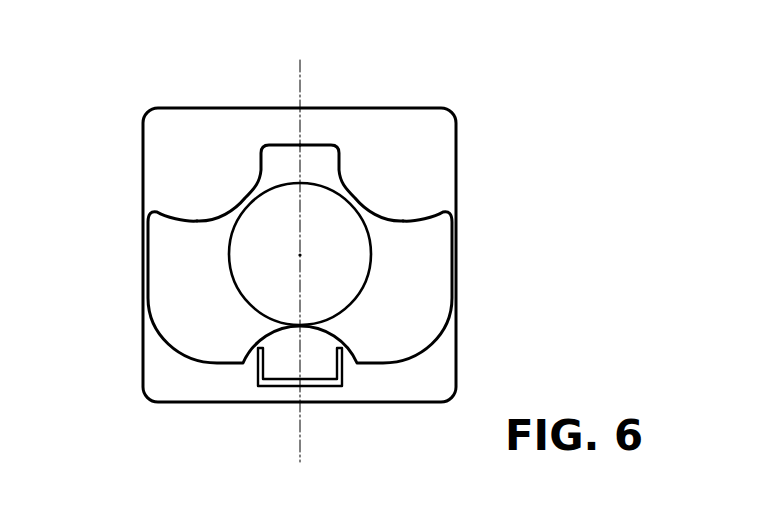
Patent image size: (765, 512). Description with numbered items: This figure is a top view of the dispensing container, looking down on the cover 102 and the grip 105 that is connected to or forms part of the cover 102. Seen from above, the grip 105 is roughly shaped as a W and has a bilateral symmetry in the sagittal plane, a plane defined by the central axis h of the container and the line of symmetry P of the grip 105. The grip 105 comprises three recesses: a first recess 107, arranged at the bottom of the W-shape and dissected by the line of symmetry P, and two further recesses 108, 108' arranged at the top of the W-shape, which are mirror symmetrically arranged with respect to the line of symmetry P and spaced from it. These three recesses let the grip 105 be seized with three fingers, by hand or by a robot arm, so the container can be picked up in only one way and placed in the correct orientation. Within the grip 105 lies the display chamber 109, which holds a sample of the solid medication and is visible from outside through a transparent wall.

The cover 102 is at (438, 158).
The grip 105 is at (158, 293).
The first recess 107 is at (308, 343).
The further recess 108 is at (371, 130).
The further recess 108' is at (226, 116).
The display chamber 109 is at (287, 275).
The line of symmetry P is at (312, 247).
The central axis h is at (300, 255).